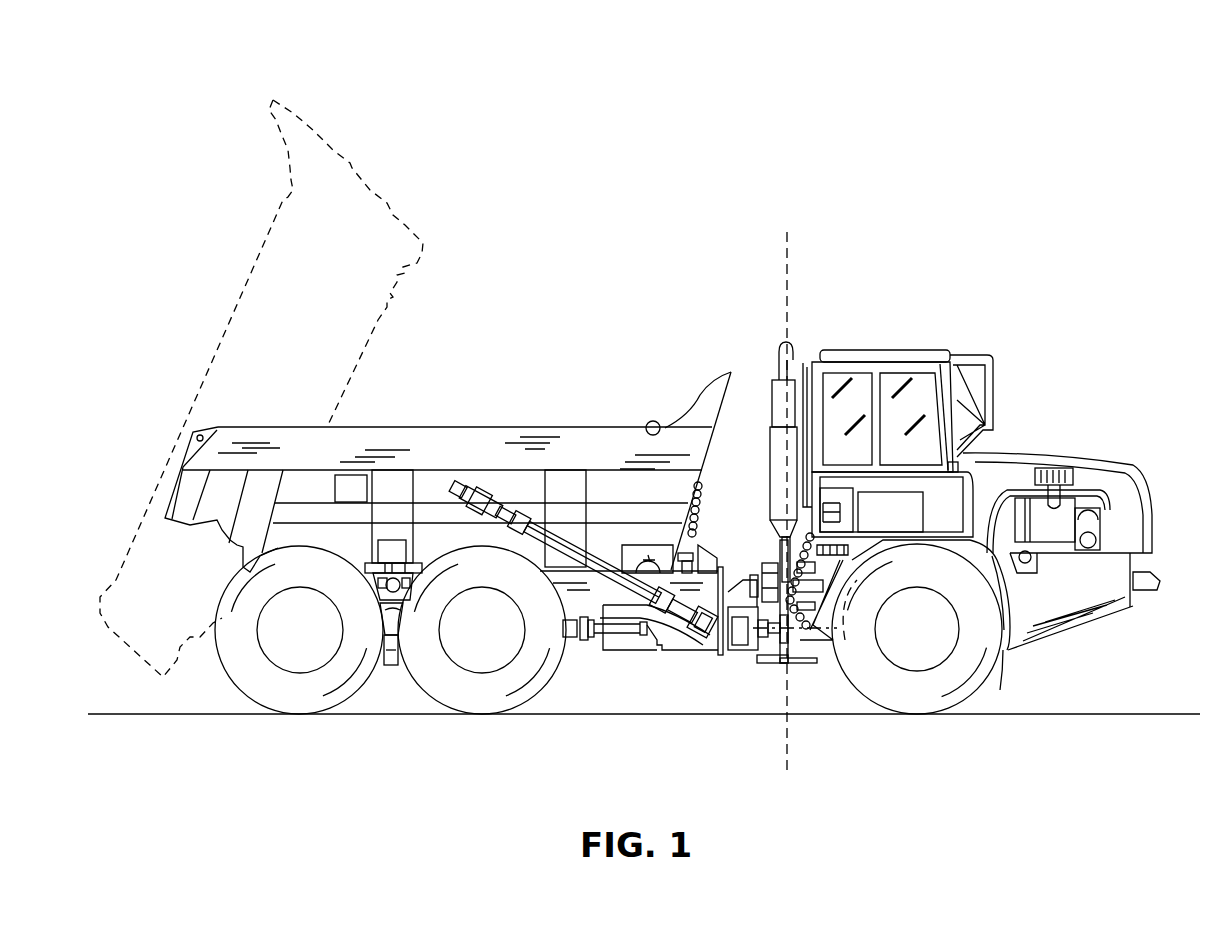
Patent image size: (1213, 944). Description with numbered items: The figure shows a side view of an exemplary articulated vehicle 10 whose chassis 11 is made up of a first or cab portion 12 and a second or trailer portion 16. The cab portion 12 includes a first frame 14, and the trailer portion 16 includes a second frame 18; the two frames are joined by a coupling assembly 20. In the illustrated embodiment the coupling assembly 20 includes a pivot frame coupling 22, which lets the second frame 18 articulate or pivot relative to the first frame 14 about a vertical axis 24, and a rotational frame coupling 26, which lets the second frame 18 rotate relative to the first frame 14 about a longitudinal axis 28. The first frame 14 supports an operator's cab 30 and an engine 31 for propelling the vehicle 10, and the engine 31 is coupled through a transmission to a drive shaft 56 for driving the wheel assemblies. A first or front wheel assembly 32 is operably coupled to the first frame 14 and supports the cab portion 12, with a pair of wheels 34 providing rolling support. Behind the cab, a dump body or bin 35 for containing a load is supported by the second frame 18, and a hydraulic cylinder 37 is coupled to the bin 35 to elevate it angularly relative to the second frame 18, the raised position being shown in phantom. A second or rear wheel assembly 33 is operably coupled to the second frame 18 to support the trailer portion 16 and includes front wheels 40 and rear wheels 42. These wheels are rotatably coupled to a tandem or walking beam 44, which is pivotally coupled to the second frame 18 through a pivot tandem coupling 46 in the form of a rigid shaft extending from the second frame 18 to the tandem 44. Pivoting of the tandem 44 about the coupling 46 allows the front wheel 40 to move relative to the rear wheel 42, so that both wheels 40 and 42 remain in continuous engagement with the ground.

The articulated vehicle 10 is at (1087, 157).
The chassis 11 is at (1098, 738).
The cab portion 12 is at (977, 285).
The first frame 14 is at (1045, 637).
The trailer portion 16 is at (548, 232).
The second frame 18 is at (600, 615).
The coupling assembly 20 is at (707, 677).
The pivot frame coupling 22 is at (795, 650).
The vertical axis 24 is at (787, 270).
The rotational frame coupling 26 is at (760, 645).
The longitudinal axis 28 is at (857, 623).
The operator's cab 30 is at (889, 350).
The engine 31 is at (1035, 500).
The front wheel assembly 32 is at (983, 697).
The rear wheel assembly 33 is at (393, 718).
The wheels 34 is at (923, 705).
The dump body or bin 35 is at (393, 297).
The hydraulic cylinder 37 is at (508, 493).
The front wheels 40 is at (483, 700).
The rear wheels 42 is at (283, 695).
The tandem or walking beam 44 is at (390, 642).
The pivot tandem coupling 46 is at (392, 580).
The drive shaft 56 is at (620, 630).